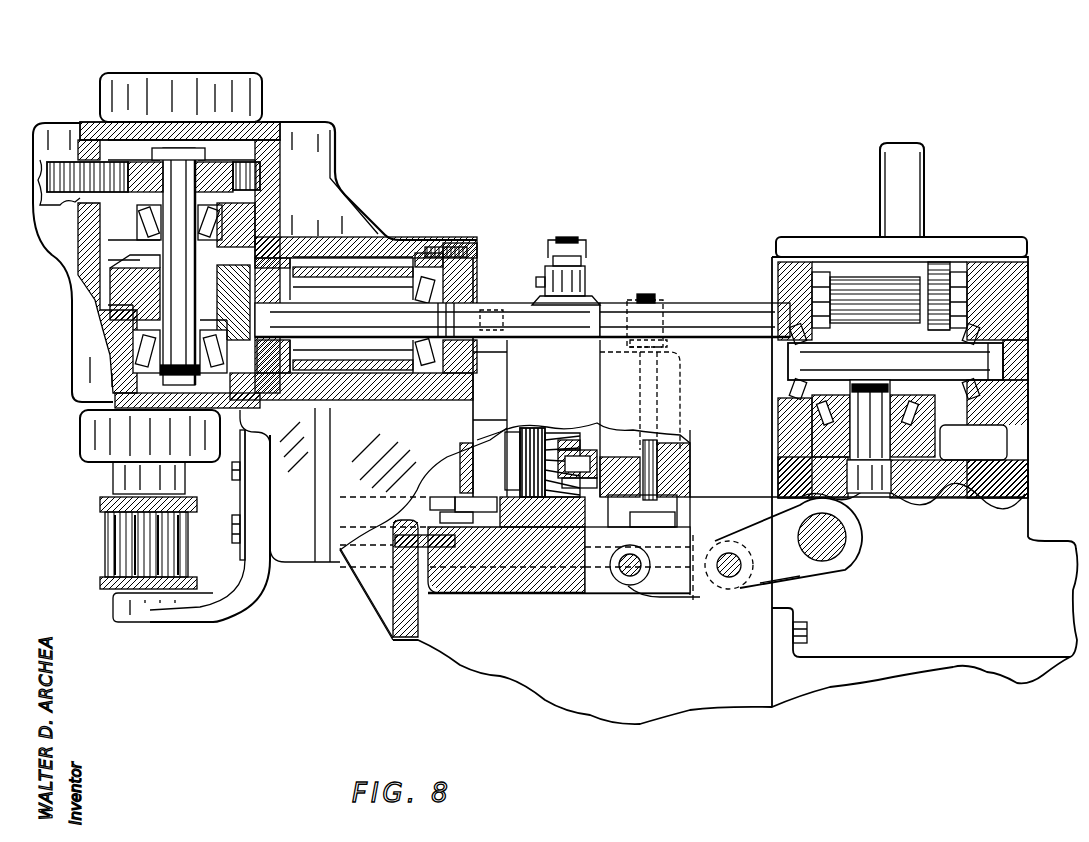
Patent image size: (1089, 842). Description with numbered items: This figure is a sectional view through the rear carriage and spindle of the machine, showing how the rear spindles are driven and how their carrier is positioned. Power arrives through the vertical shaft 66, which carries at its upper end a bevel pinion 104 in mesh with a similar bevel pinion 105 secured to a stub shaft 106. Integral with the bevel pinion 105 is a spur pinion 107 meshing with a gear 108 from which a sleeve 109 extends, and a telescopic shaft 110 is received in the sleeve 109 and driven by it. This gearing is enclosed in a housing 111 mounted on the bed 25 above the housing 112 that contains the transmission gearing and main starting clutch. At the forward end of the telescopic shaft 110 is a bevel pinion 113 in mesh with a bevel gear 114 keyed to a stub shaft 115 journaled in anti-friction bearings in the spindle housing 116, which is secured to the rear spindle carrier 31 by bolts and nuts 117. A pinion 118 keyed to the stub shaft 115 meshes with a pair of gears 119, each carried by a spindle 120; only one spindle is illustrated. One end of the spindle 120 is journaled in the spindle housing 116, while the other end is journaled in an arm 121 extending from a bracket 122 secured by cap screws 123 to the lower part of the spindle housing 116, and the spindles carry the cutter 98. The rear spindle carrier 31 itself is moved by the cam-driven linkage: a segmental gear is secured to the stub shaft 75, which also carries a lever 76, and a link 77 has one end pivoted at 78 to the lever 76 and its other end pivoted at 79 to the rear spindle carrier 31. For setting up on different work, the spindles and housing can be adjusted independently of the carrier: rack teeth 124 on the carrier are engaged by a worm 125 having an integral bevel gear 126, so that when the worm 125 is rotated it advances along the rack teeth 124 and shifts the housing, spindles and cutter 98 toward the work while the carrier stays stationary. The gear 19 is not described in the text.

The gear 19 is at (63, 177).
The bed 25 is at (690, 712).
The rear spindle carrier 31 is at (340, 212).
The vertical shaft 66 is at (893, 495).
The stub shaft 75 is at (846, 540).
The lever 76 is at (792, 578).
The link 77 is at (690, 586).
The pivot 78 is at (732, 588).
The pivot 79 is at (612, 588).
The cutter 98 is at (120, 530).
The bevel pinion 104 is at (915, 412).
The bevel pinion 105 is at (892, 330).
The stub shaft 106 is at (1005, 362).
The spur pinion 107 is at (1012, 412).
The gear 108 is at (940, 283).
The sleeve 109 is at (847, 283).
The telescopic shaft 110 is at (728, 296).
The housing 111 is at (784, 283).
The housing 112 is at (1015, 558).
The bevel pinion 113 is at (270, 302).
The bevel gear 114 is at (182, 280).
The stub shaft 115 is at (182, 305).
The spindle housing 116 is at (88, 303).
The bolts and nuts 117 is at (705, 476).
The pinion 118 is at (258, 142).
The gears 119 is at (262, 180).
The spindle 120 is at (133, 198).
The arm 121 is at (178, 615).
The bracket 122 is at (255, 588).
The cap screws 123 is at (580, 450).
The rack teeth 124 is at (560, 522).
The worm 125 is at (540, 435).
The bevel gear 126 is at (562, 433).